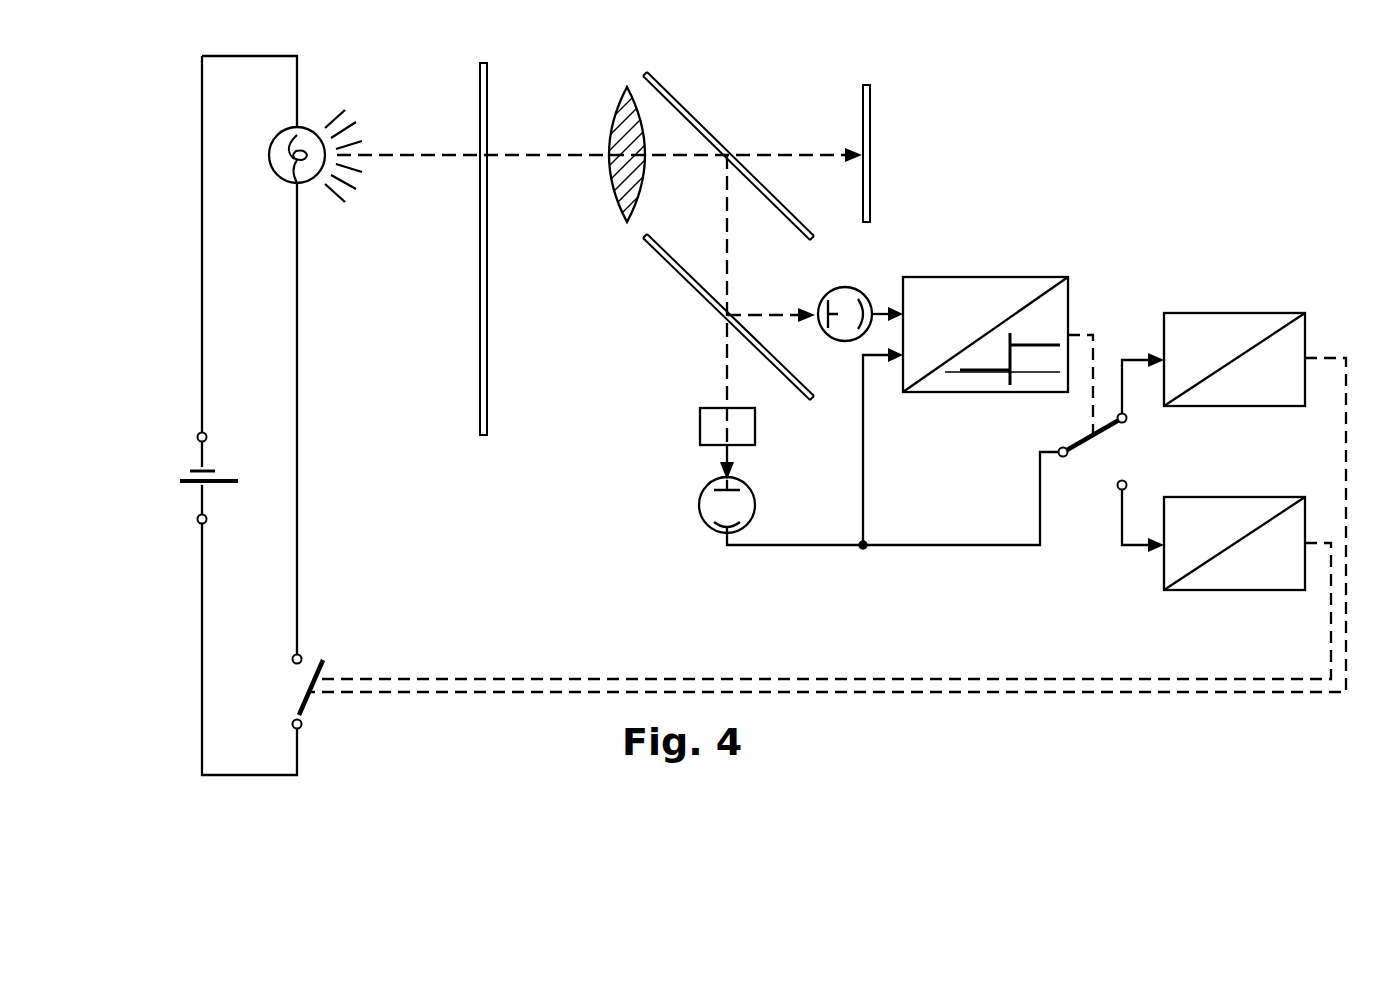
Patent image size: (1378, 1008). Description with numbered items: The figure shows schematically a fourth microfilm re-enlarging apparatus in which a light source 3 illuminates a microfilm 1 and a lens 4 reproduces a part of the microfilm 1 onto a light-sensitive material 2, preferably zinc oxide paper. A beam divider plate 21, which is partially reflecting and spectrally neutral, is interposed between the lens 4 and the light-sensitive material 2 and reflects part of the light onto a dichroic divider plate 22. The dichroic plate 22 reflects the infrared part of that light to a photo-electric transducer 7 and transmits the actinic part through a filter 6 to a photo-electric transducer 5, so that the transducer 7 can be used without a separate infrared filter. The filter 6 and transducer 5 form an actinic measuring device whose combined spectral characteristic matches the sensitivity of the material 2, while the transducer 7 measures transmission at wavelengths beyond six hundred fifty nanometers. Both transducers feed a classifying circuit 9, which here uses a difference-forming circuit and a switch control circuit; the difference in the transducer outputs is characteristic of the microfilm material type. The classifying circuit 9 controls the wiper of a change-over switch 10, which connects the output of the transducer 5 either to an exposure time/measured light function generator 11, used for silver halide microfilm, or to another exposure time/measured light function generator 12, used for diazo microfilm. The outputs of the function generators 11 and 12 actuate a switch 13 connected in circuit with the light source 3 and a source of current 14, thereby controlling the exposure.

The microfilm 1 is at (487, 78).
The light-sensitive material 2 is at (862, 90).
The light source 3 is at (284, 166).
The lens 4 is at (620, 110).
The photo-electric transducer 5 is at (712, 505).
The filter 6 is at (710, 418).
The photo-electric transducer 7 is at (848, 292).
The classifying circuit 9 is at (1012, 290).
The change-over switch 10 is at (1092, 448).
The exposure time/measured light function generator 11 is at (1256, 322).
The exposure time/measured light function generator 12 is at (1250, 508).
The switch 13 is at (306, 694).
The source of current 14 is at (218, 474).
The beam divider plate 21 is at (662, 84).
The dichroic divider plate 22 is at (656, 245).